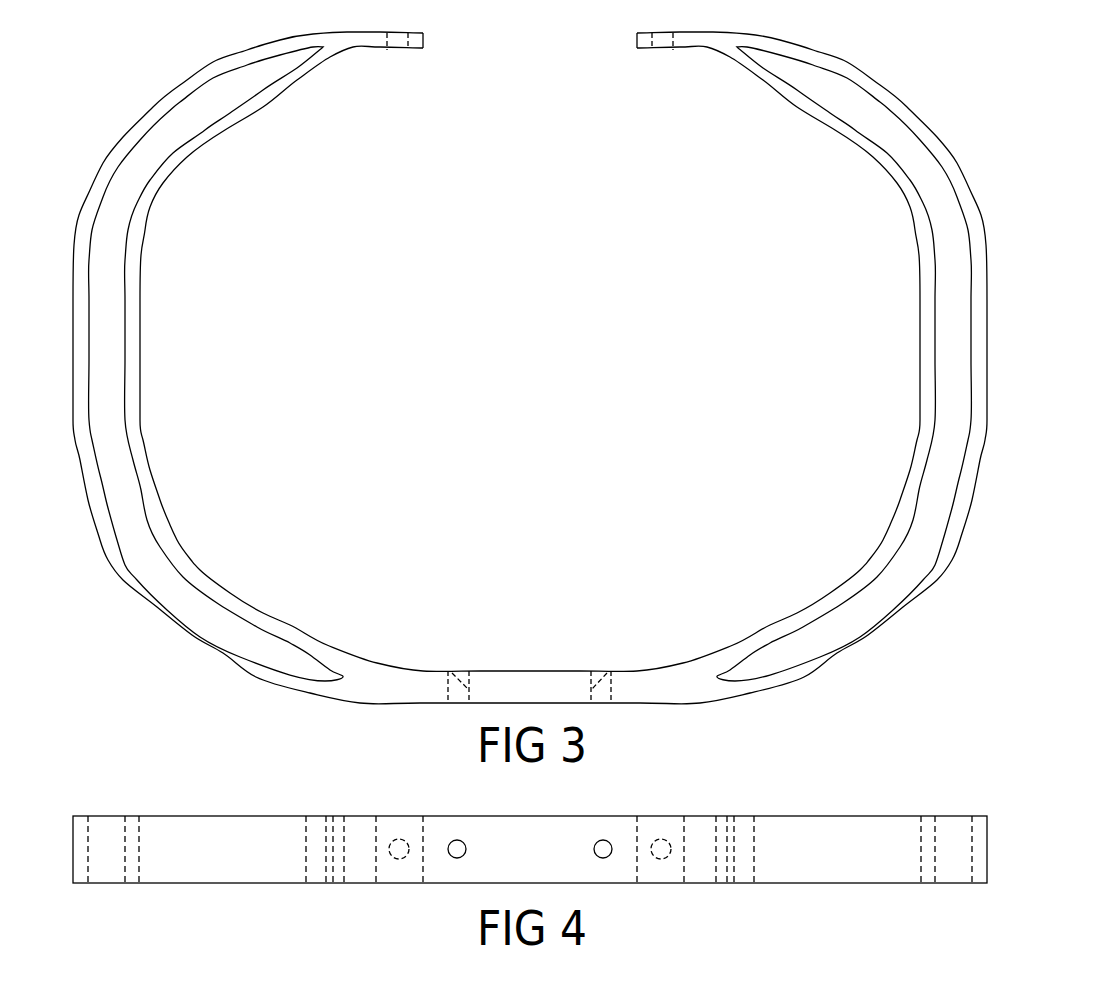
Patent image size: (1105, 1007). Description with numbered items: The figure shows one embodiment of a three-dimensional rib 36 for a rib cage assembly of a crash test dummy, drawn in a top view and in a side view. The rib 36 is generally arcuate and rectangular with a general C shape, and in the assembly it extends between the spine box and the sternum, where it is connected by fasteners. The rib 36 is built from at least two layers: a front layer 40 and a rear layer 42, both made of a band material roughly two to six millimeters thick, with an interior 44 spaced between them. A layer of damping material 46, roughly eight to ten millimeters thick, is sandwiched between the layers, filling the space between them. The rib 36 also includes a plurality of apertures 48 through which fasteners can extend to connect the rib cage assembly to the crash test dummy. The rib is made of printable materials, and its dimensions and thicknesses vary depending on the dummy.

In FIG. 3, the three-dimensional rib 36 is at (573, 368).
In FIG. 4, the three-dimensional rib 36 is at (543, 804).
In FIG. 3, the front layer 40 is at (965, 497).
In FIG. 4, the front layer 40 is at (840, 845).
In FIG. 3, the rear layer 42 is at (880, 553).
In FIG. 3, the interior 44 is at (970, 388).
In FIG. 3, the damping material 46 is at (935, 508).
In FIG. 3, the aperture 48 is at (451, 672).
In FIG. 4, the aperture 48 is at (456, 841).